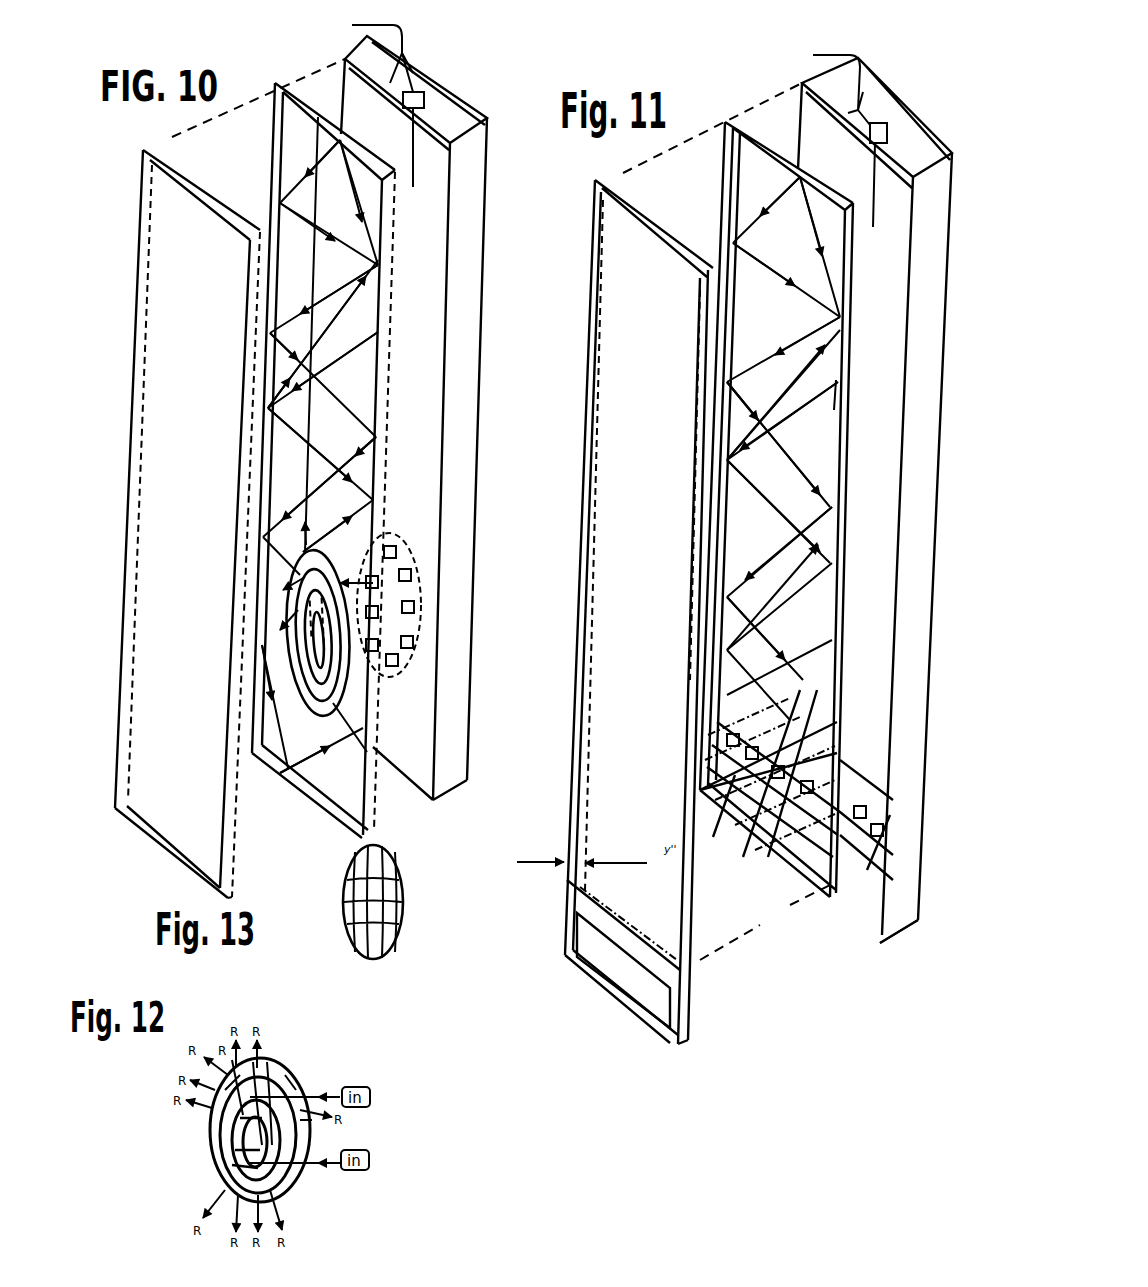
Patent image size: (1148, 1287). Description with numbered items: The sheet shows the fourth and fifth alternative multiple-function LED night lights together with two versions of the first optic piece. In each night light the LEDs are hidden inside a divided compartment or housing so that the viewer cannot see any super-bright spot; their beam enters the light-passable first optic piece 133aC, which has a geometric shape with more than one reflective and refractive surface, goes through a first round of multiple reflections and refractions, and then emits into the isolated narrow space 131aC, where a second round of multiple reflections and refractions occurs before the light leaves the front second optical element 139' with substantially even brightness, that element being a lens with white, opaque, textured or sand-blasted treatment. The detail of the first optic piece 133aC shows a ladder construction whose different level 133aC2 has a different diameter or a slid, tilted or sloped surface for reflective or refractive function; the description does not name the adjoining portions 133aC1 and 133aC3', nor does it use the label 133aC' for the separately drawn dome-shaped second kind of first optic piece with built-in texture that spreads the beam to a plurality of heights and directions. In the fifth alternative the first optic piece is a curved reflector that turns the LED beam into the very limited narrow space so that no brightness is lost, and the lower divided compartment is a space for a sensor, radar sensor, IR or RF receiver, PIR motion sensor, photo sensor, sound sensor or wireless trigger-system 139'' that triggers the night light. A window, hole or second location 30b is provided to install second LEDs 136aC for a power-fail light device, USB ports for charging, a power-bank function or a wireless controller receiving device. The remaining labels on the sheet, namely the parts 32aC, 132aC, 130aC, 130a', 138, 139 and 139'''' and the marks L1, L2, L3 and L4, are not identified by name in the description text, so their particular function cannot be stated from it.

In FIG. 10, the second location 30b is at (364, 103).
In FIG. 11, the second location 30b is at (823, 137).
In FIG. 10, the connector 32aC is at (452, 116).
In FIG. 11, the connector 132aC is at (917, 148).
In FIG. 10, the first light guide panel 130aC is at (212, 200).
In FIG. 11, the first light guide panel 130aC is at (683, 208).
In FIG. 10, the isolated narrow space 131aC is at (287, 163).
In FIG. 11, the isolated narrow space 131aC is at (740, 203).
In FIG. 10, the second LED(s) 136aC is at (388, 538).
In FIG. 12, the second LED(s) 136aC is at (263, 1080).
In FIG. 11, the second LED(s) 136aC is at (890, 815).
In FIG. 10, the first optic piece 133aC is at (360, 633).
In FIG. 12, the first optic piece 133aC is at (287, 1148).
In FIG. 13, the light extraction lens element with grid 133aC' is at (334, 902).
In FIG. 12, the first lens layer 133aC1 is at (230, 1121).
In FIG. 12, the different level of ladder construction 133aC2 is at (222, 1156).
In FIG. 12, the third lens layer 133aC3' is at (189, 1183).
In FIG. 10, the panel edge 130a' is at (262, 849).
In FIG. 11, the layered light extraction structure 138 is at (830, 880).
In FIG. 11, the panel edge portion 139 is at (868, 411).
In FIG. 11, the front second optical element 139' is at (567, 886).
In FIG. 11, the sensor or wireless trigger-system 139'' is at (623, 974).
In FIG. 11, the right panel bottom edge 139'''' is at (870, 964).
In FIG. 11, the layer 1 L1 is at (863, 872).
In FIG. 11, the layer 2 L2 is at (758, 889).
In FIG. 11, the layer 3 L3 is at (737, 873).
In FIG. 11, the layer 4 L4 is at (712, 854).